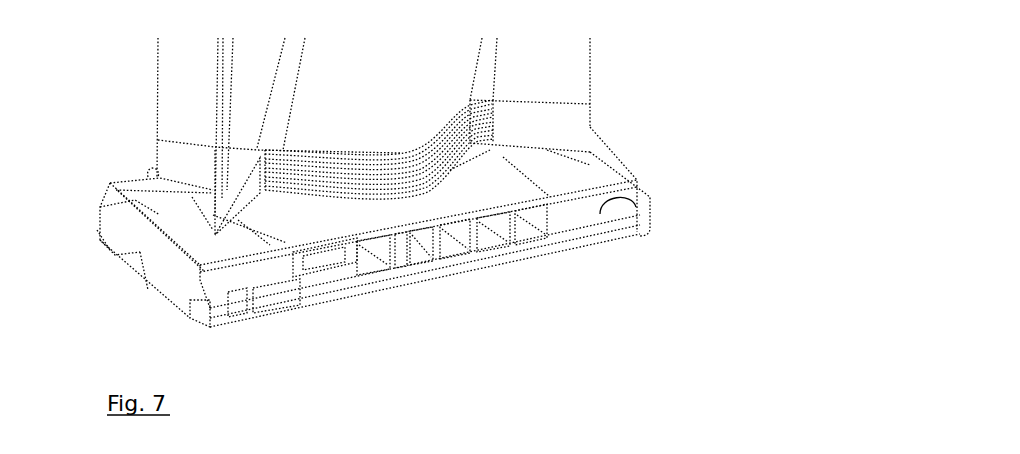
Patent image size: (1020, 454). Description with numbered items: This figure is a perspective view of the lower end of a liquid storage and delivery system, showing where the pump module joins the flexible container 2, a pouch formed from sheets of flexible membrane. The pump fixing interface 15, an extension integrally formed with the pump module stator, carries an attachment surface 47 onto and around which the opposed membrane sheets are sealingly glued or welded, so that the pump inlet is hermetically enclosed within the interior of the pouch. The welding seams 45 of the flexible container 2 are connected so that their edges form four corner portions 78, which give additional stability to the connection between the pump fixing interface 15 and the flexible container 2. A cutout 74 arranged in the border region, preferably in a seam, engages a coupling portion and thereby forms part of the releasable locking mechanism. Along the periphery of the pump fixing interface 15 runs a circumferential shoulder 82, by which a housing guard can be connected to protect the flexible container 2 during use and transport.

The flexible container 2 is at (618, 80).
The pump fixing interface 15 is at (592, 170).
The welding seams 45 is at (548, 122).
The attachment surface 47 is at (318, 174).
The cutout 74 is at (590, 127).
The corner portions 78 is at (213, 218).
The circumferential shoulder 82 is at (630, 205).